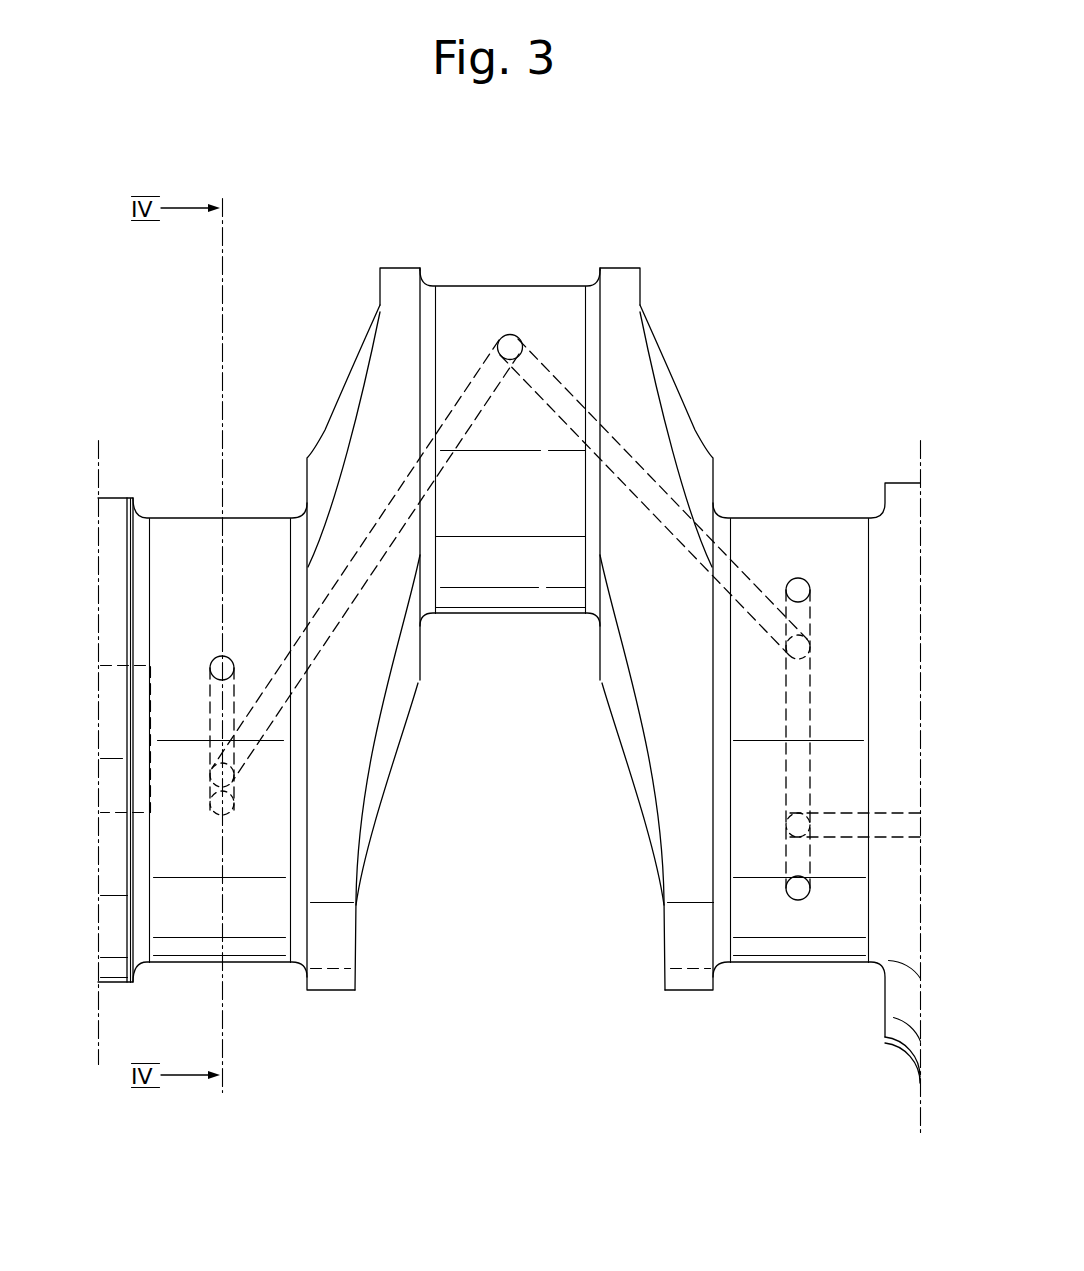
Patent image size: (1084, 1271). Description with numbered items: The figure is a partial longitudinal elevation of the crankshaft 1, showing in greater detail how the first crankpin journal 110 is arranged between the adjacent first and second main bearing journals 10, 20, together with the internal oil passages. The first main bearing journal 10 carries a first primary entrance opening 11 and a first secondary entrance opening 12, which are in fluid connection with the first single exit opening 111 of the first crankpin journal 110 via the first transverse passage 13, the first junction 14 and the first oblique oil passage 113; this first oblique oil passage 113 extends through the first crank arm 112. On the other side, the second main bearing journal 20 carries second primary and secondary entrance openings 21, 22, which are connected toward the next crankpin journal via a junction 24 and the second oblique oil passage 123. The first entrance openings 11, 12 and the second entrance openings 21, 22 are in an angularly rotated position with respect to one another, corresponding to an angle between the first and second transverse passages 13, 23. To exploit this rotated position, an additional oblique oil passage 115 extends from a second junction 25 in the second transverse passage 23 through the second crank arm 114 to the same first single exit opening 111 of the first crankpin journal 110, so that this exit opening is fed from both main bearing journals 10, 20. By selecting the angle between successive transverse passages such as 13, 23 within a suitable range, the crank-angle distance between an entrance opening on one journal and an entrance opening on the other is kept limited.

The crankshaft 1 is at (352, 238).
The first main bearing journal 10 is at (257, 560).
The first primary entrance opening 11 is at (227, 812).
The first secondary entrance opening 12 is at (217, 652).
The first transverse passage 13 is at (213, 702).
The first junction 14 is at (213, 772).
The second main bearing journal 20 is at (753, 550).
The second primary entrance opening 21 is at (800, 583).
The second secondary entrance opening 22 is at (793, 892).
The second transverse passage 23 is at (800, 718).
The first junction 24 is at (790, 826).
The second junction 25 is at (810, 637).
The first crankpin journal 110 is at (472, 318).
The first single exit opening 111 is at (508, 345).
The first crank arm 112 is at (326, 905).
The first oblique oil passage 113 is at (353, 572).
The second crank arm 114 is at (675, 945).
The additional oblique oil passage 115 is at (673, 523).
The second oblique oil passage 123 is at (850, 830).